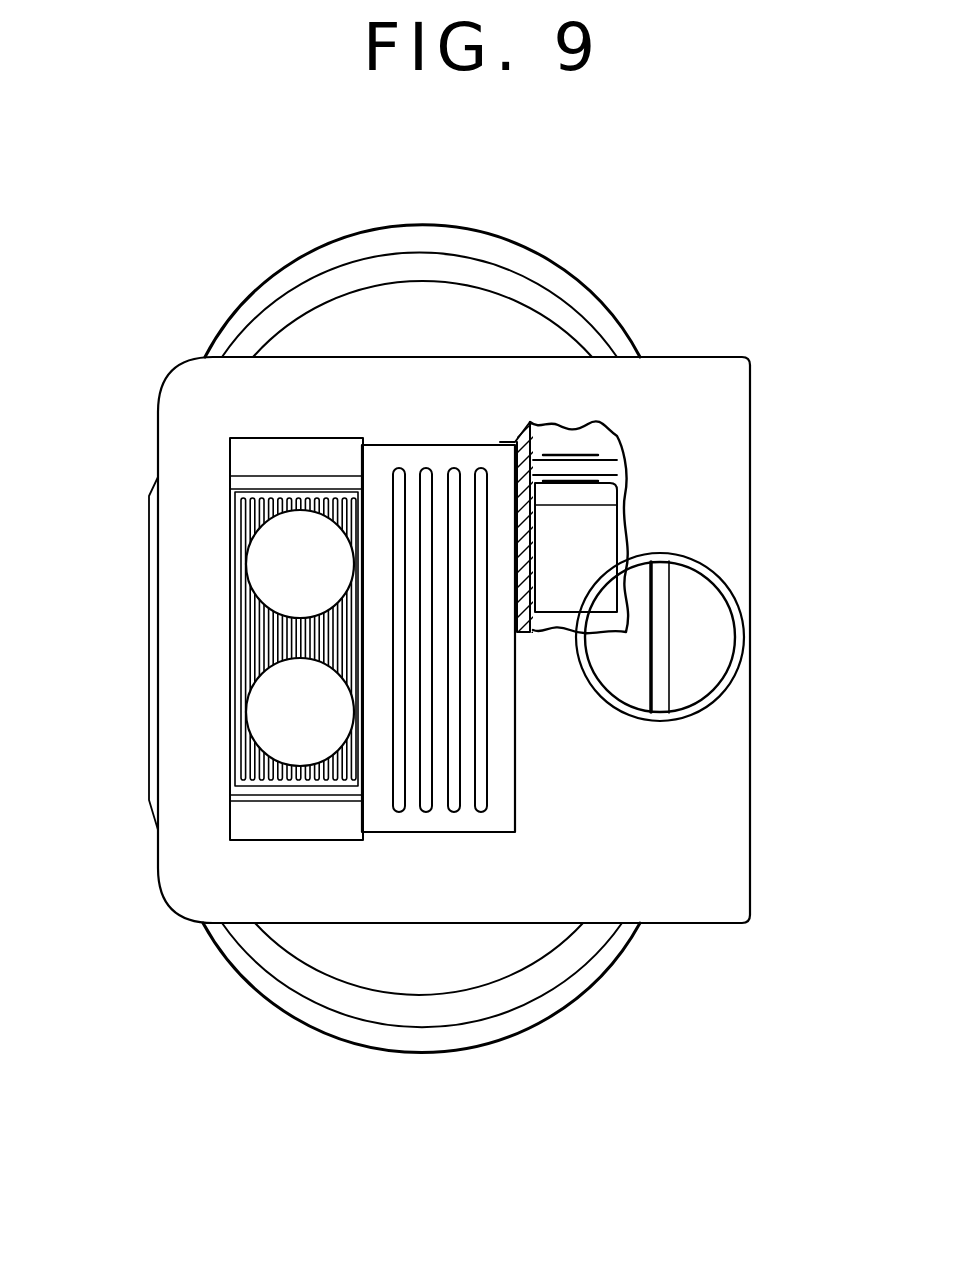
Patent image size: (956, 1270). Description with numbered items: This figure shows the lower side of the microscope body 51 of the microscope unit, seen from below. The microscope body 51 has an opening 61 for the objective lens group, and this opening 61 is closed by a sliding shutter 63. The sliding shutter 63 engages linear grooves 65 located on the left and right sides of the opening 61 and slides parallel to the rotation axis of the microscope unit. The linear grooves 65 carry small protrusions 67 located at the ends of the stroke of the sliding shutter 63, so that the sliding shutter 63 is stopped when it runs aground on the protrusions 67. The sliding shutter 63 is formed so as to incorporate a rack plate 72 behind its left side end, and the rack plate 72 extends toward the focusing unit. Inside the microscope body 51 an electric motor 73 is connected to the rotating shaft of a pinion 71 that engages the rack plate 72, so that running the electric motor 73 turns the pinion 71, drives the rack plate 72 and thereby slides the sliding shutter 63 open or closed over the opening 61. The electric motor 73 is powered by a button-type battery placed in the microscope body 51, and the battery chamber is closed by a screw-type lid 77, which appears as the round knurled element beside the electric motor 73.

The microscope body 51 is at (413, 897).
The opening 61 is at (278, 560).
The sliding shutter 63 is at (427, 455).
The linear grooves 65 is at (297, 478).
The protrusions 67 is at (250, 480).
The pinion 71 is at (557, 458).
The rack plate 72 is at (585, 468).
The electric motor 73 is at (600, 523).
The lid 77 is at (710, 645).